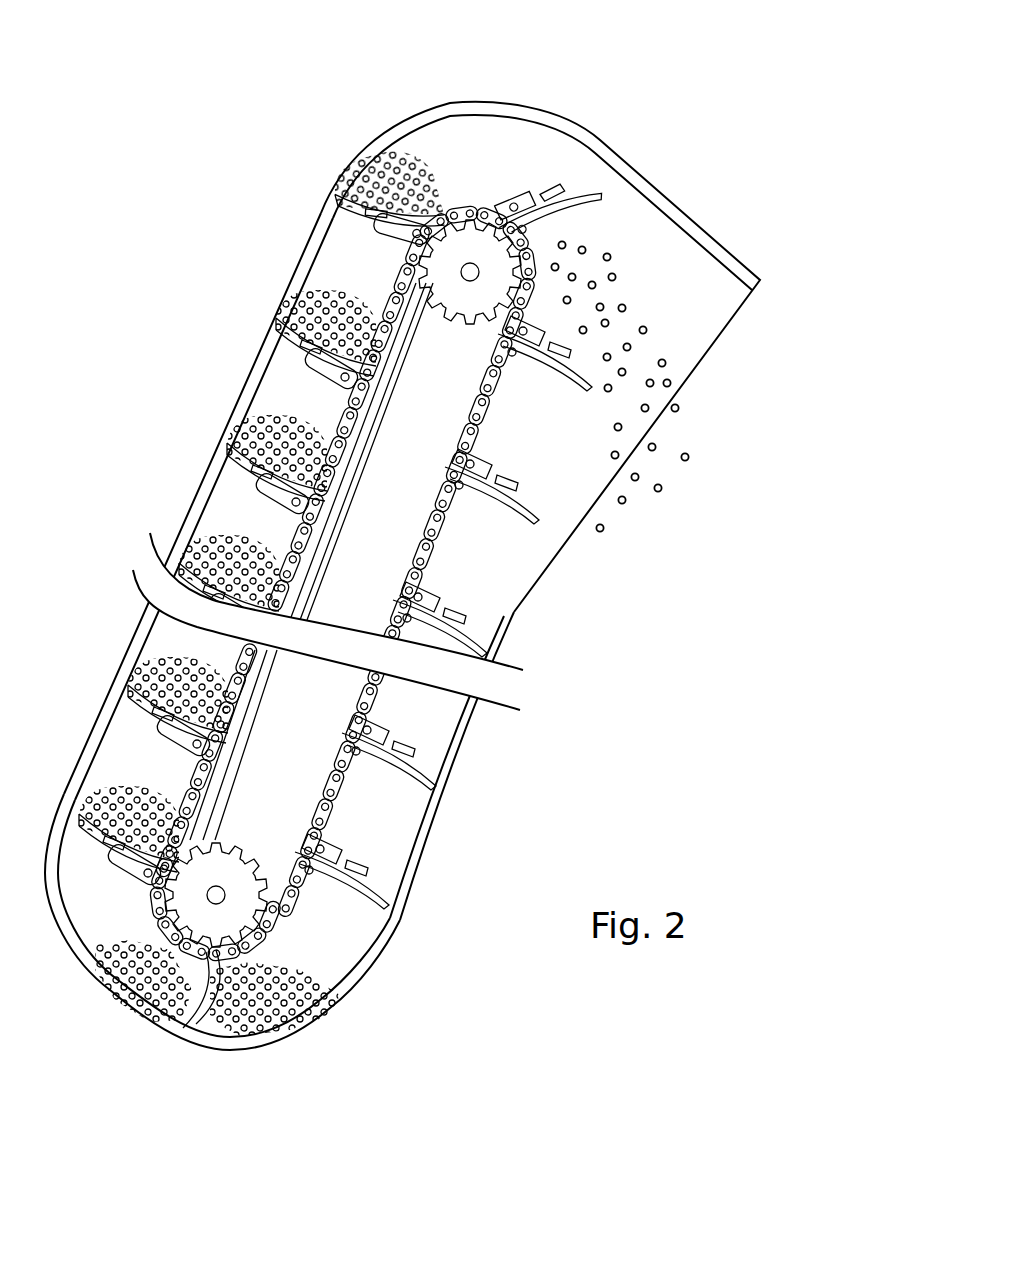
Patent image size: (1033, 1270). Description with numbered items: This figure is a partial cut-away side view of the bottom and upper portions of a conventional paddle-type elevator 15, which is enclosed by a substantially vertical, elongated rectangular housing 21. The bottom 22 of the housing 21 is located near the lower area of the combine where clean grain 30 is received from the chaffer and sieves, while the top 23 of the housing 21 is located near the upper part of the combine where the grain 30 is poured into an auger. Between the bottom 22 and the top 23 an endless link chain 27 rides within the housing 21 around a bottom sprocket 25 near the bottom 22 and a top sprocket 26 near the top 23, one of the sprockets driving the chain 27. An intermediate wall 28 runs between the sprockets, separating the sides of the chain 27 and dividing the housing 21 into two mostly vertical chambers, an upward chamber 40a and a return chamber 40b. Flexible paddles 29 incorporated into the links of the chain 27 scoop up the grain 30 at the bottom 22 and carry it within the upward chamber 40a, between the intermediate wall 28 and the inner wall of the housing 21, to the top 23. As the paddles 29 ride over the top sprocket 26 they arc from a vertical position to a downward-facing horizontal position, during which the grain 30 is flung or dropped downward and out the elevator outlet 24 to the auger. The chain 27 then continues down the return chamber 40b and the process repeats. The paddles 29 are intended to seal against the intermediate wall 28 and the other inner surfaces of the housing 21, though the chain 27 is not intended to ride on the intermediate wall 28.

The paddle-type elevator 15 is at (185, 179).
The housing 21 is at (235, 392).
The bottom 22 is at (108, 1008).
The top 23 is at (520, 105).
The elevator outlet 24 is at (730, 383).
The bottom sprocket 25 is at (245, 897).
The top sprocket 26 is at (492, 288).
The endless link chain 27 is at (318, 812).
The intermediate wall 28 is at (330, 530).
The flexible paddles 29 is at (497, 490).
The grain 30 is at (328, 1012).
The upward chamber 40a is at (235, 510).
The return chamber 40b is at (420, 722).